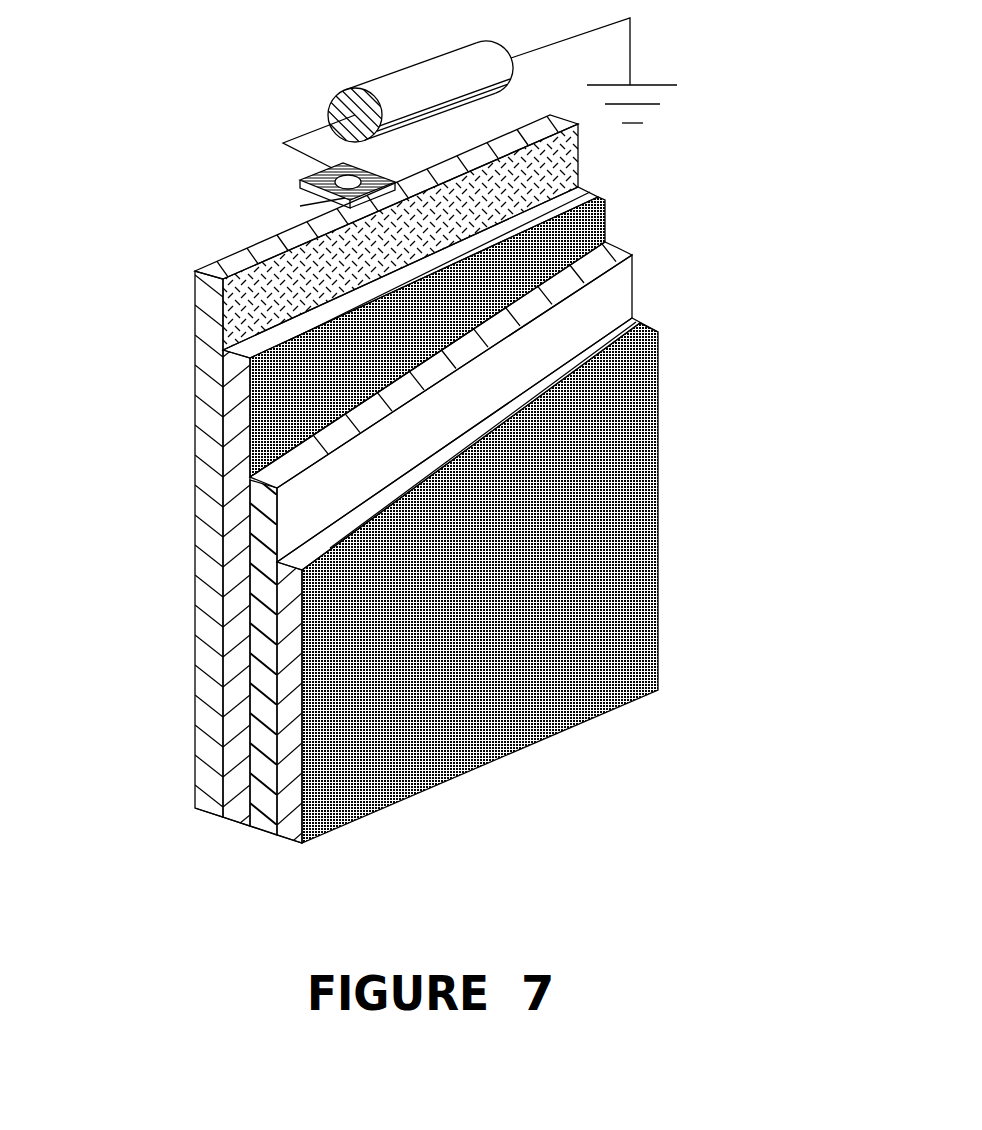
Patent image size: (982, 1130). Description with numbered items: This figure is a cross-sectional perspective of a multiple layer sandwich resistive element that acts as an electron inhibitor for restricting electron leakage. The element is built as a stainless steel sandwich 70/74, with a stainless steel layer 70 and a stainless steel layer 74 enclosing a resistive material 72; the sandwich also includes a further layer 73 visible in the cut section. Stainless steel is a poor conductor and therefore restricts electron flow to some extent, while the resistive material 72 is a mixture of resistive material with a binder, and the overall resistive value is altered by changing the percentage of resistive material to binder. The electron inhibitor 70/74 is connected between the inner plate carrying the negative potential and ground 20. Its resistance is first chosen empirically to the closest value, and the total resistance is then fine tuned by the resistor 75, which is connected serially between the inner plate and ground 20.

The ground 20 is at (628, 70).
The stainless steel plate of sandwich 70 is at (597, 223).
The resistive material 72 is at (613, 287).
The layer of sandwich resistive element 73 is at (195, 300).
The stainless steel plate of sandwich 74 is at (642, 382).
The resistor 75 is at (408, 88).